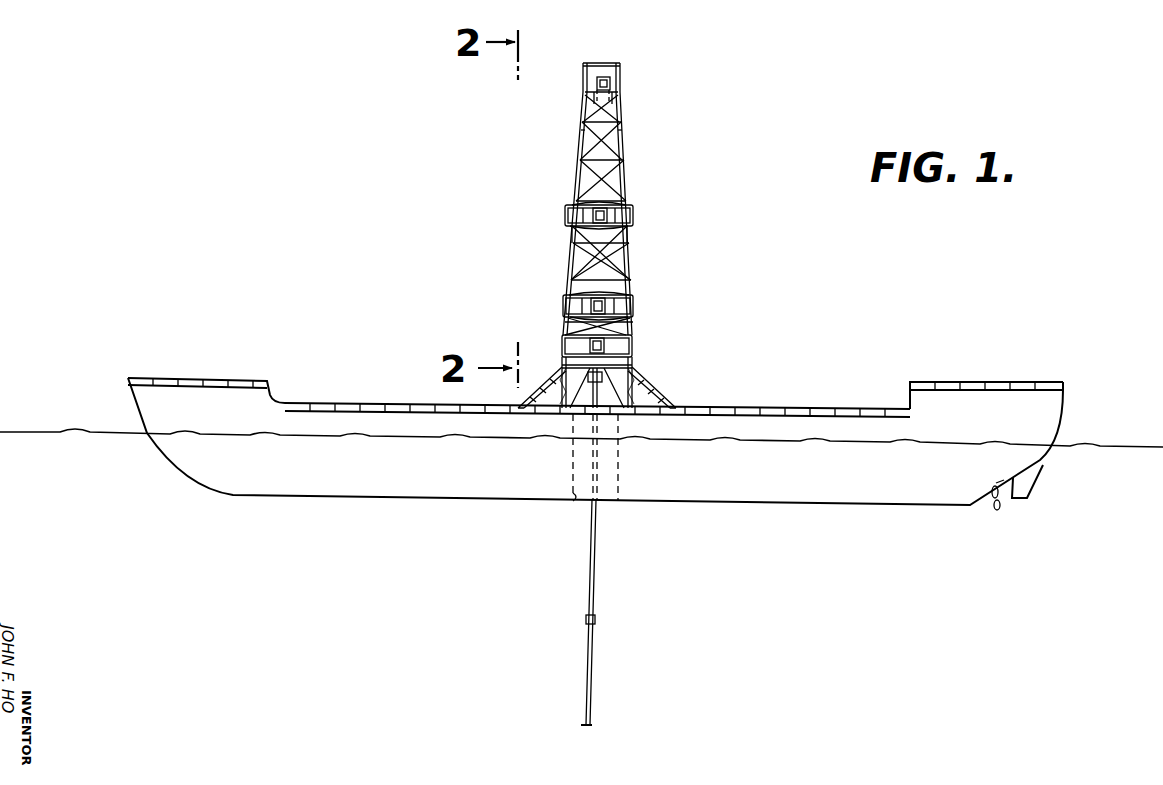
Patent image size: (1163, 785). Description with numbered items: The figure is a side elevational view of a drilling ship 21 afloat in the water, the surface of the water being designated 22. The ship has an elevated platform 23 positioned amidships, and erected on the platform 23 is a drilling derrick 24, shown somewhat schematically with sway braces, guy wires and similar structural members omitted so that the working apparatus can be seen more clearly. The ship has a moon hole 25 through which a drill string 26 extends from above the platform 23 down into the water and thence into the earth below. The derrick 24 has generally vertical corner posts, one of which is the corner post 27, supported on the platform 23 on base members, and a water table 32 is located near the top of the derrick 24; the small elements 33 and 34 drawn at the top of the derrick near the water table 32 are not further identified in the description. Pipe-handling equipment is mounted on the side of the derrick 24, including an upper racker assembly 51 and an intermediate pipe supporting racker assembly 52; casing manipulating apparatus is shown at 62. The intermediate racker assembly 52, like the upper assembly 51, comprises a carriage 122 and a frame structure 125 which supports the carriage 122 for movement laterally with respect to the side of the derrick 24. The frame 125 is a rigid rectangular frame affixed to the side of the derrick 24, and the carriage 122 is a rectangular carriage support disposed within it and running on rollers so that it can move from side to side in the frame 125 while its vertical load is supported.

The drilling ship 21 is at (897, 367).
The surface of the water 22 is at (60, 431).
The elevated platform 23 is at (636, 362).
The drilling derrick 24 is at (652, 180).
The moon hole 25 is at (570, 507).
The drill string 26 is at (598, 590).
The corner post 27 is at (580, 135).
The water table 32 is at (612, 94).
The crown block 33 is at (612, 82).
The hoisting line 34 is at (590, 96).
The upper racker assembly 51 is at (558, 215).
The intermediate pipe supporting racker assembly 52 is at (552, 292).
The casing manipulating apparatus 62 is at (552, 333).
The carriage 122 is at (610, 215).
The frame structure 125 is at (642, 231).